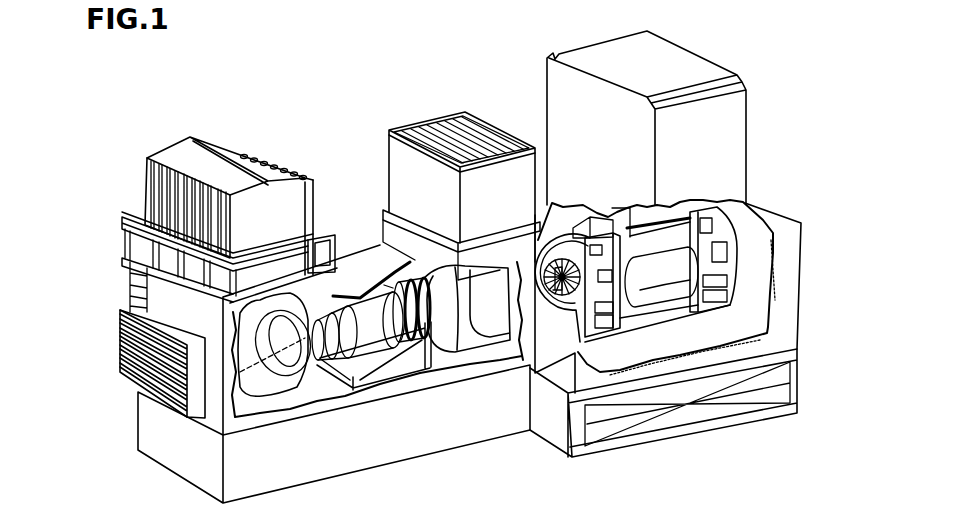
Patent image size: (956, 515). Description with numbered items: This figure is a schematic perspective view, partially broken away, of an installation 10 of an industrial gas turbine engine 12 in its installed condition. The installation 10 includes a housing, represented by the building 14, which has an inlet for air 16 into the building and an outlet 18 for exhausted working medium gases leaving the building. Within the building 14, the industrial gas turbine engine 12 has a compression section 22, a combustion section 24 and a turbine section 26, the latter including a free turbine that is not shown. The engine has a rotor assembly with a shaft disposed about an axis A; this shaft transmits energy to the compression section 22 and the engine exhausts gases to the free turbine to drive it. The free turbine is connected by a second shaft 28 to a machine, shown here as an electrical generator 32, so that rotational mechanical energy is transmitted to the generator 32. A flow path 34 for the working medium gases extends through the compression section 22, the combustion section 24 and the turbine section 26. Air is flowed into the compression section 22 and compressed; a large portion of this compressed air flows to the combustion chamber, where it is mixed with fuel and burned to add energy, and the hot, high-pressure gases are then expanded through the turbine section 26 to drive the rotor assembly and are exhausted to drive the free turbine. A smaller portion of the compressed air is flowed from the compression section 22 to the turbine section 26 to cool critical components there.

The installation 10 is at (268, 112).
The industrial gas turbine engine 12 is at (386, 340).
The building 14 is at (712, 244).
The inlet for air 16 is at (124, 378).
The outlet 18 is at (433, 116).
The compression section 22 is at (333, 296).
The combustion section 24 is at (393, 281).
The turbine section 26 is at (402, 268).
The second shaft 28 is at (535, 268).
The electrical generator 32 is at (660, 288).
The flow path 34 is at (273, 381).